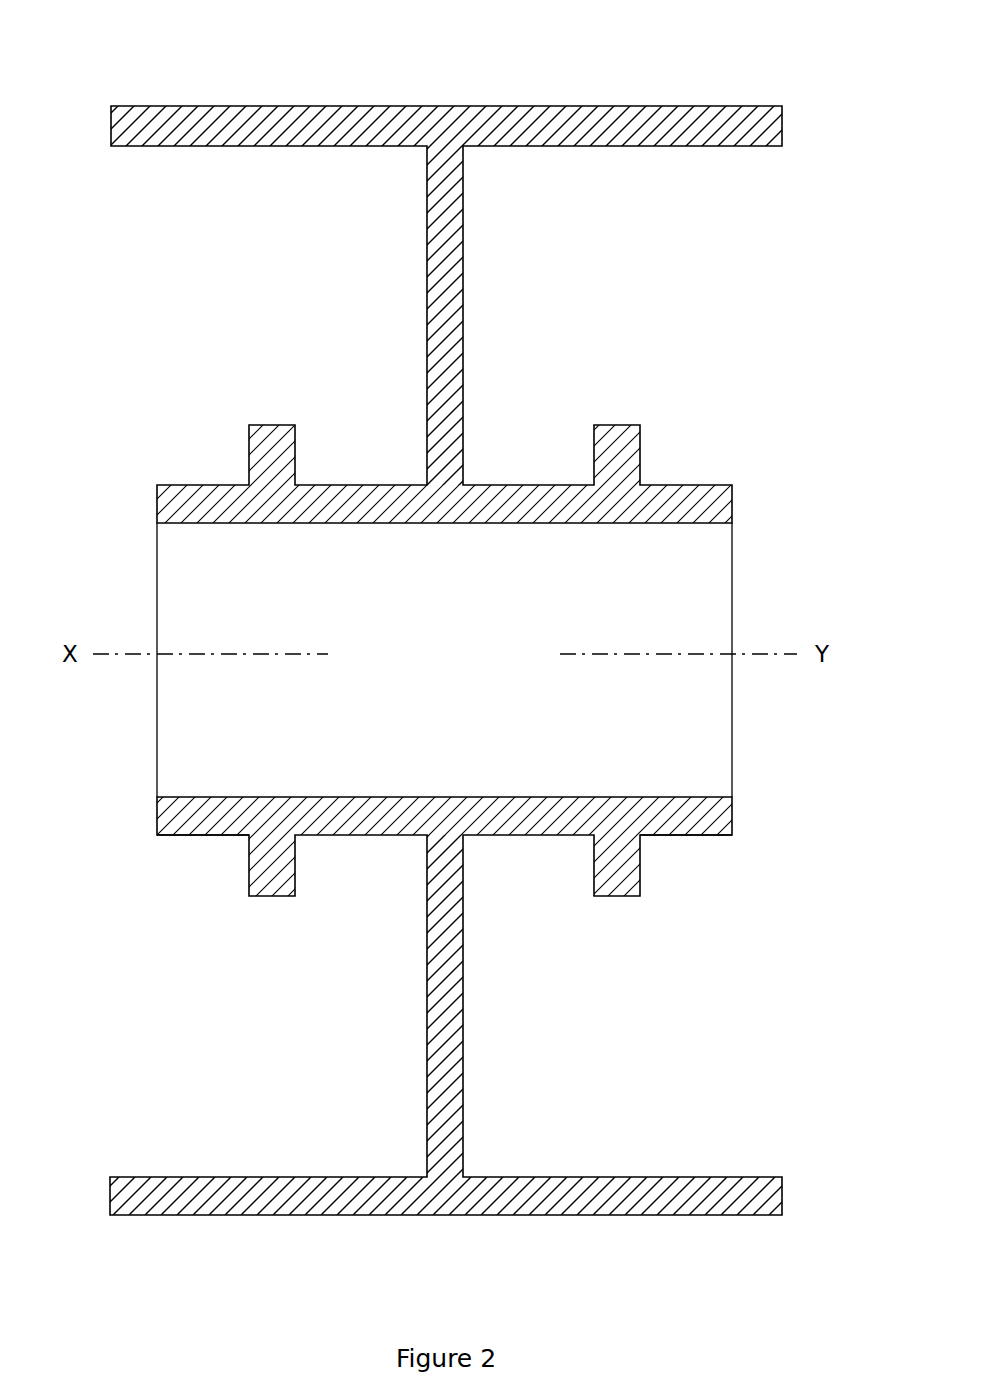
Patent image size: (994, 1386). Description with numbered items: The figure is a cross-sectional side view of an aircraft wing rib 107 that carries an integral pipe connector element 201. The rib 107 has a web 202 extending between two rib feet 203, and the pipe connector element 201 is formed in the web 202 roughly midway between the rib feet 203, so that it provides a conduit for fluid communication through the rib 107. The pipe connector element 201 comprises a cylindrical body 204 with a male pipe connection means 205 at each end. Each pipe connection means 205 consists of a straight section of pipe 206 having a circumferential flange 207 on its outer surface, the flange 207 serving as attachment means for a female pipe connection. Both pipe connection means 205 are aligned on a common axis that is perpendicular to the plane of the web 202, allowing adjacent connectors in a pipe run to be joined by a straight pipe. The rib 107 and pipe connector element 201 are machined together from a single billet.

The rib 107 is at (443, 128).
The pipe connector element 201 is at (407, 830).
The web 202 is at (427, 313).
The rib feet 203 is at (218, 107).
The cylindrical body 204 is at (507, 497).
The male pipe connection means 205 is at (213, 452).
The straight section of pipe 206 is at (187, 828).
The circumferential flange 207 is at (270, 425).